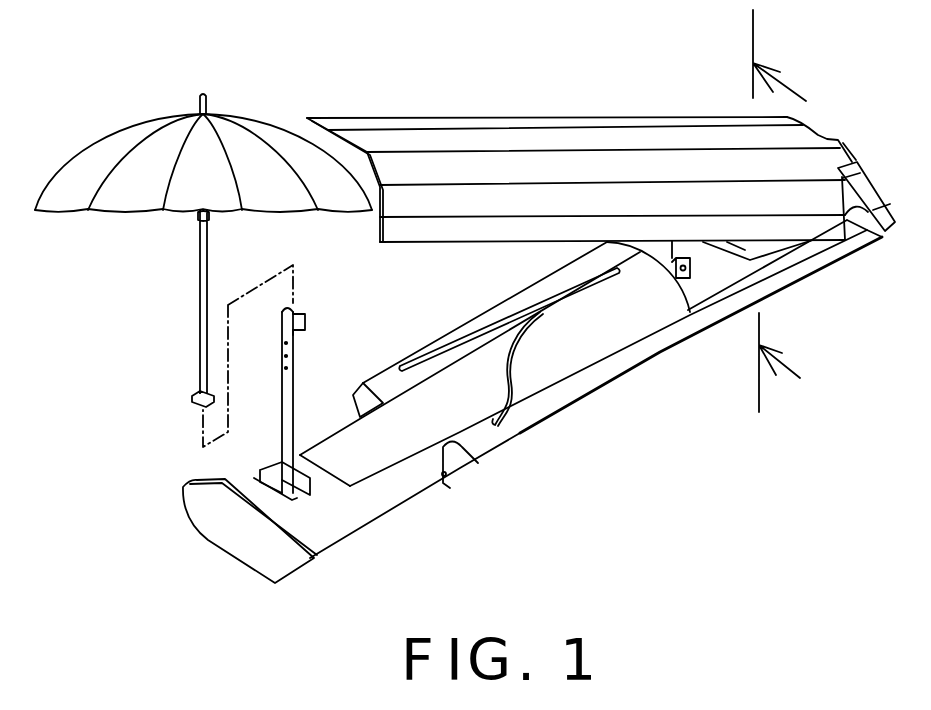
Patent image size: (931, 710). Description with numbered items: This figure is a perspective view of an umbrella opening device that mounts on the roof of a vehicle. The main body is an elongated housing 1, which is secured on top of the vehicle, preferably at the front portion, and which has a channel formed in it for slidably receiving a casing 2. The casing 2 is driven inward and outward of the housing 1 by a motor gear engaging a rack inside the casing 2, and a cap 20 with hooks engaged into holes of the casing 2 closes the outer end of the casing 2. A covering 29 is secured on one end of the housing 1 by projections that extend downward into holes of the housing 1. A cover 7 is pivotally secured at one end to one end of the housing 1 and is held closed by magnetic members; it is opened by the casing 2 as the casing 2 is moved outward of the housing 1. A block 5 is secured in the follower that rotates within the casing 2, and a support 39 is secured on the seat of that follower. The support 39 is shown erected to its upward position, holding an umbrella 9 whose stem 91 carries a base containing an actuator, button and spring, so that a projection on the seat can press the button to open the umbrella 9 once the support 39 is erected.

The housing 1 is at (537, 433).
The casing 2 is at (368, 498).
The block 5 is at (790, 211).
The cover 7 is at (505, 150).
The umbrella 9 is at (123, 140).
The cap 20 is at (258, 548).
The covering 29 is at (588, 322).
The support 39 is at (288, 393).
The stem 91 is at (205, 292).